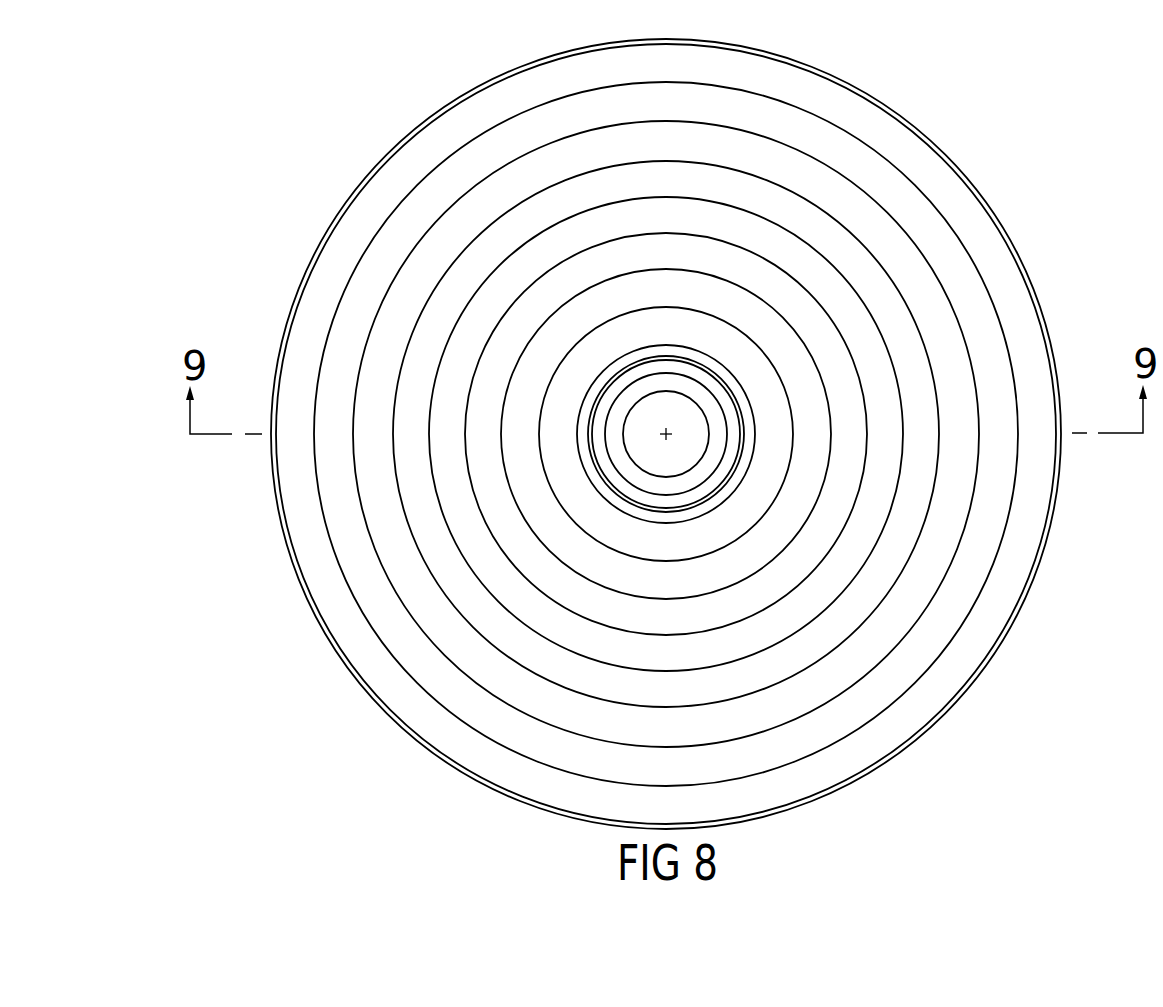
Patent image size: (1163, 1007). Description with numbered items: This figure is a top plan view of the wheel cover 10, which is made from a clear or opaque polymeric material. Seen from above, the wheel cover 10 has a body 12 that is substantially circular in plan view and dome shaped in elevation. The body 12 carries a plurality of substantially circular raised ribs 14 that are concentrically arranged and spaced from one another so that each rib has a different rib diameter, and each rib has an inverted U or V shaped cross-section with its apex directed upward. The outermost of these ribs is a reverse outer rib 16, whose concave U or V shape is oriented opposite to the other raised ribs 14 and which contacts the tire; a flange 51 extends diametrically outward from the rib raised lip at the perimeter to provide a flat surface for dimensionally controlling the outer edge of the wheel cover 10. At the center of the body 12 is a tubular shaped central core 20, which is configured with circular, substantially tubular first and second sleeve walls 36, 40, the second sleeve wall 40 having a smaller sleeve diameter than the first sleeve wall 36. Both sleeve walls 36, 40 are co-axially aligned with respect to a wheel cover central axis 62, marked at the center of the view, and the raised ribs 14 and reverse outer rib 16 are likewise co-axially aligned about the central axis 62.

The wheel cover 10 is at (1017, 153).
The body 12 is at (932, 300).
The raised ribs 14 is at (900, 458).
The reverse outer rib 16 is at (1028, 289).
The flange 51 is at (1050, 345).
The central core 20 is at (712, 375).
The first sleeve wall 36 is at (716, 407).
The second sleeve wall 40 is at (710, 438).
The wheel cover central axis 62 is at (666, 434).